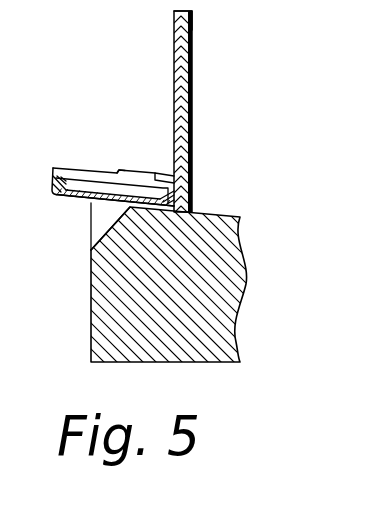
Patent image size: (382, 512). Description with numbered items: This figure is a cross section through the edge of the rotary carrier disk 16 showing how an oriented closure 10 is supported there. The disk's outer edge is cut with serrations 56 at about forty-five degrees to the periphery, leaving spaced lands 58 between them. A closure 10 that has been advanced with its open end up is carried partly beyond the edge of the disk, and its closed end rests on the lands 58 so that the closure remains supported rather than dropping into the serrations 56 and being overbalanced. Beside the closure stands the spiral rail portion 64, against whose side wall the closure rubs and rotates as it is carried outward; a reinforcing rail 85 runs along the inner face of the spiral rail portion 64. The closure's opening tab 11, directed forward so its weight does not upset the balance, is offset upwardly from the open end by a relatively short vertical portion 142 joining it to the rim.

The closure 10 is at (61, 167).
The opening tab 11 is at (166, 175).
The rotary carrier disk 16 is at (90, 338).
The serration 56 is at (103, 239).
The land 58 is at (92, 205).
The spiral rail portion 64 is at (174, 23).
The reinforcing rail 85 is at (192, 48).
The vertical portion 142 is at (125, 168).